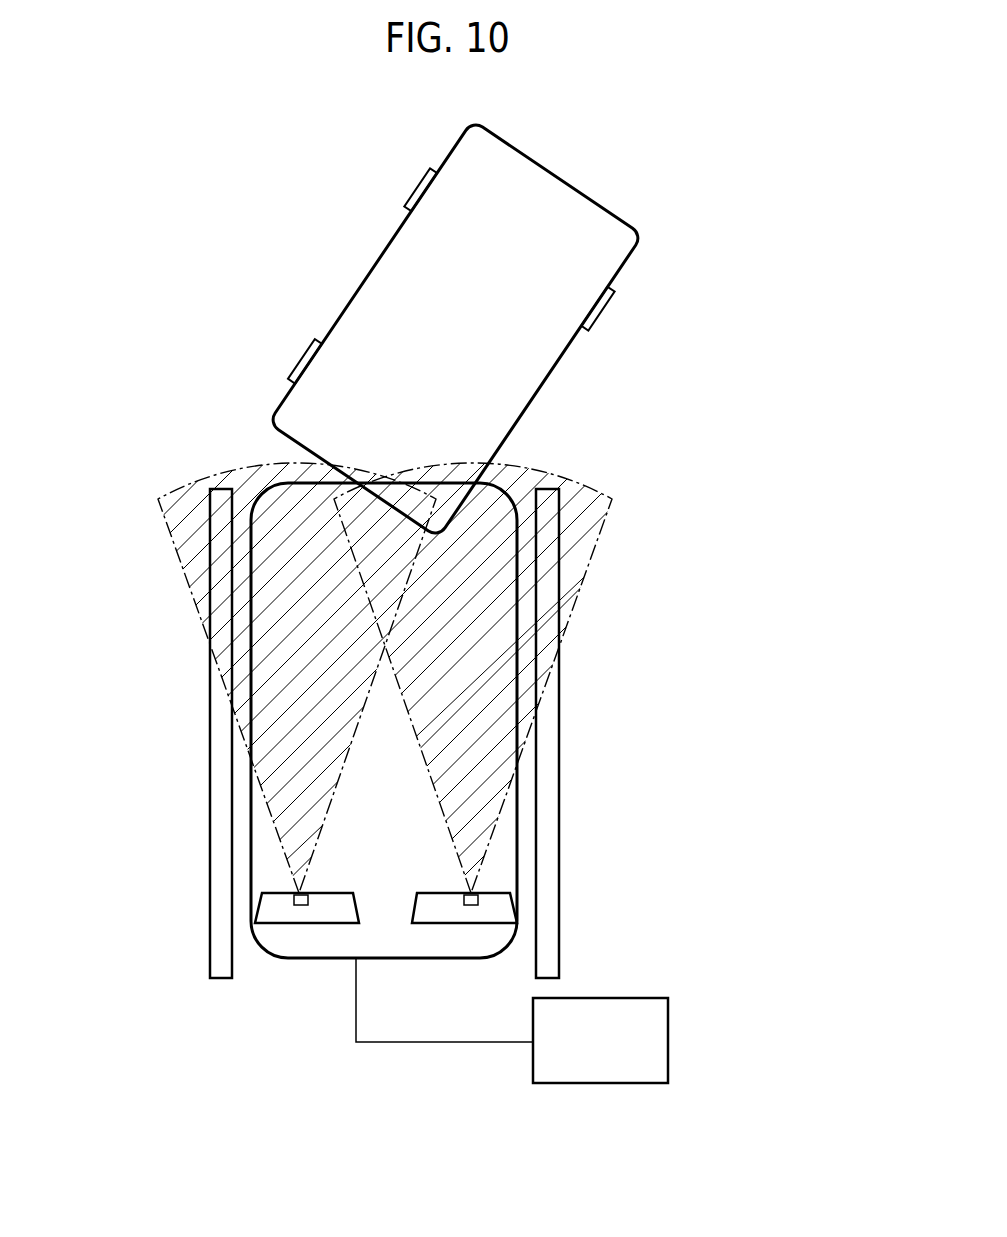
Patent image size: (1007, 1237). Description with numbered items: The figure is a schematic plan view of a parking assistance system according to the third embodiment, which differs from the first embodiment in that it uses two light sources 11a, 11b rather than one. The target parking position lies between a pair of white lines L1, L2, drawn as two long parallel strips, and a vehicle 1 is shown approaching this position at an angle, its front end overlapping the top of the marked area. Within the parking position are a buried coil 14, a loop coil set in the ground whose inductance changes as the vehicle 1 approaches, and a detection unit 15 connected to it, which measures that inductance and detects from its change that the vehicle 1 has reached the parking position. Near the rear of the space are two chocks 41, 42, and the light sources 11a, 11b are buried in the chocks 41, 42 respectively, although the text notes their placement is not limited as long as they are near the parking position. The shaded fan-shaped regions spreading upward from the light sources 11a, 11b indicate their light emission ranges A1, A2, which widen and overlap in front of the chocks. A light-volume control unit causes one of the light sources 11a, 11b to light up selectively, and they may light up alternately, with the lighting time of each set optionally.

The vehicle 1 is at (636, 247).
The buried coil 14 is at (517, 613).
The detection unit 15 is at (668, 1032).
The chock 41 is at (333, 892).
The chock 42 is at (512, 893).
The light source 11a is at (300, 905).
The light source 11b is at (470, 905).
The light emission range A1 is at (170, 532).
The light emission range A2 is at (600, 532).
The white line L1 is at (210, 785).
The white line L2 is at (559, 763).